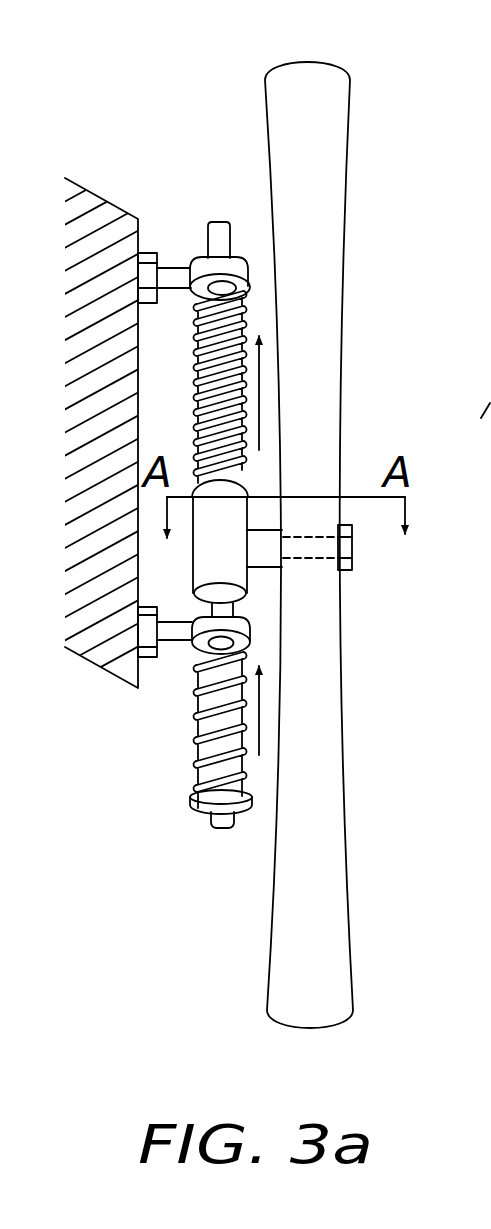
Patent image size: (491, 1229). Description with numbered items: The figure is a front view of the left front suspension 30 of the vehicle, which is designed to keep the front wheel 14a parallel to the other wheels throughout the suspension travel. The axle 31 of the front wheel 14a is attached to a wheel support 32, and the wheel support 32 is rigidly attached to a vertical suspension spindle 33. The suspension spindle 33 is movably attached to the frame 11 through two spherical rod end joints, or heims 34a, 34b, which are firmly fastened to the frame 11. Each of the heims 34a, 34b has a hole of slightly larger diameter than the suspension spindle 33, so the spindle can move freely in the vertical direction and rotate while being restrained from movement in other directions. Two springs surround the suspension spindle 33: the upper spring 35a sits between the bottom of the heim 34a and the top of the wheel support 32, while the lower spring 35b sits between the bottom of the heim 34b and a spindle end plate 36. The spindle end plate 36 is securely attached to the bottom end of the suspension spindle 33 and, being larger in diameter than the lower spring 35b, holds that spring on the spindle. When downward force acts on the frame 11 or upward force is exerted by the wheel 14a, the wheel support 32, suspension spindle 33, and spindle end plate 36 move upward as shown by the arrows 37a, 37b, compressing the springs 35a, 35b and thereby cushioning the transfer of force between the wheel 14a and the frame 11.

The frame 11 is at (70, 177).
The front wheel 14a is at (350, 185).
The front suspension 30 is at (176, 112).
The axle 31 is at (353, 550).
The wheel support 32 is at (248, 584).
The suspension spindle 33 is at (219, 221).
The spherical rod end joint (heim) 34a is at (185, 266).
The spherical rod end joint (heim) 34b is at (183, 645).
The upper spring 35a is at (244, 310).
The lower spring 35b is at (244, 708).
The spindle end plate 36 is at (192, 813).
The arrow 37a is at (260, 738).
The arrow 37b is at (259, 402).